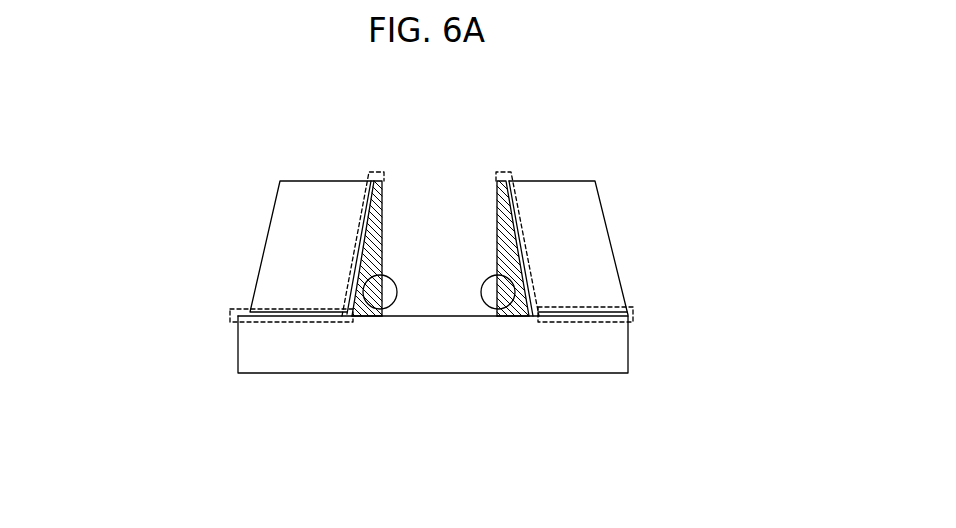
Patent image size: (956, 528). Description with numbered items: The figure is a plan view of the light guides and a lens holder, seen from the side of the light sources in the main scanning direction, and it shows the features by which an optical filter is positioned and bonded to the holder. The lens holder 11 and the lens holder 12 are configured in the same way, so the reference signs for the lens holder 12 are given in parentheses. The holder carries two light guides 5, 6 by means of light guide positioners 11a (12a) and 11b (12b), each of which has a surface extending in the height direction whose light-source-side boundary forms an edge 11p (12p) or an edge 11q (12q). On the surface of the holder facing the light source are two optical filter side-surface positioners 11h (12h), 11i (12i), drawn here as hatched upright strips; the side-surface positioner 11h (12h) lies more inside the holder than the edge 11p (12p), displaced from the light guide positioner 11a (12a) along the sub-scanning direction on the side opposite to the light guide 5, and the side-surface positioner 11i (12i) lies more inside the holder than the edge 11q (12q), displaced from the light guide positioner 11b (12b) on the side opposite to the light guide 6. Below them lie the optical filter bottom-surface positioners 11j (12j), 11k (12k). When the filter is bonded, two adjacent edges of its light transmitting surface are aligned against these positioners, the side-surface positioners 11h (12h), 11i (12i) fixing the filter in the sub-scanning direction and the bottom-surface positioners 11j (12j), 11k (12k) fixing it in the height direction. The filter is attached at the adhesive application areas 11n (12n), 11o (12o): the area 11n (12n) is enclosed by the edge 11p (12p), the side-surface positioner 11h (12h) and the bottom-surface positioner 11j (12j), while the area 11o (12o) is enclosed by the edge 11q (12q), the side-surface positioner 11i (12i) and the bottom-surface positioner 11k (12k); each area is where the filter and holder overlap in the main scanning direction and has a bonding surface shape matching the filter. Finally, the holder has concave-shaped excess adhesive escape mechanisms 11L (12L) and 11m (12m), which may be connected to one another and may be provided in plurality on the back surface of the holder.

The light guide 5 is at (275, 246).
The light guide 6 is at (601, 248).
The lens holder 11 is at (433, 243).
The lens holder 12 is at (433, 243).
The light guide positioner 11a is at (217, 352).
The light guide positioner 12a is at (217, 352).
The light guide positioner 11b is at (674, 359).
The light guide positioner 12b is at (674, 359).
The optical filter side-surface positioner 11h is at (231, 225).
The optical filter side-surface positioner 12h is at (231, 225).
The optical filter side-surface positioner 11i is at (651, 234).
The optical filter side-surface positioner 12i is at (651, 234).
The optical filter bottom-surface positioner 11j is at (316, 368).
The optical filter bottom-surface positioner 12j is at (316, 368).
The optical filter bottom-surface positioner 11k is at (568, 368).
The optical filter bottom-surface positioner 12k is at (568, 368).
The excess adhesive escape mechanism 11L is at (191, 305).
The excess adhesive escape mechanism 12L is at (191, 305).
The excess adhesive escape mechanism 11m is at (684, 308).
The excess adhesive escape mechanism 12m is at (684, 308).
The adhesive application area 11n is at (222, 281).
The adhesive application area 12n is at (222, 281).
The adhesive application area 11o is at (649, 283).
The adhesive application area 12o is at (649, 283).
The edge 11p is at (225, 204).
The edge 12p is at (225, 204).
The edge 11q is at (659, 207).
The edge 12q is at (659, 207).